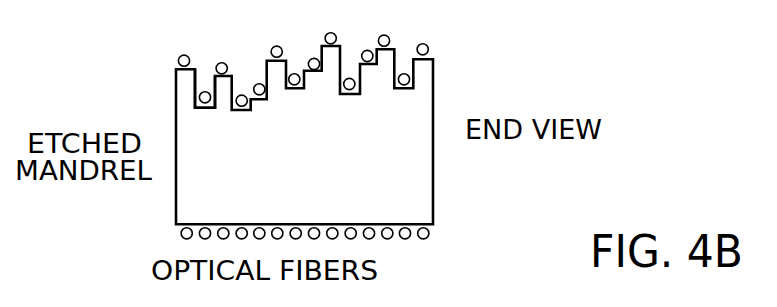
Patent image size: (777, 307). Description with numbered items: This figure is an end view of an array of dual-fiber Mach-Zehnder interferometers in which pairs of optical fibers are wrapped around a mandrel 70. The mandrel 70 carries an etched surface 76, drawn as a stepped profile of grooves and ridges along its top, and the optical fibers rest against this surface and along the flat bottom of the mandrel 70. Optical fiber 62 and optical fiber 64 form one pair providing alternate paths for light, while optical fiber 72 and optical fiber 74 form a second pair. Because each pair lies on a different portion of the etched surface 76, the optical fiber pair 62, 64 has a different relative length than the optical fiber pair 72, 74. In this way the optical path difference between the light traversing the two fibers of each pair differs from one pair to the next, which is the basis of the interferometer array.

The optical fiber 62 is at (427, 240).
The optical fiber 64 is at (427, 42).
The mandrel 70 is at (315, 164).
The optical fiber 72 is at (405, 240).
The optical fiber 74 is at (405, 73).
The etched surface 76 is at (210, 82).